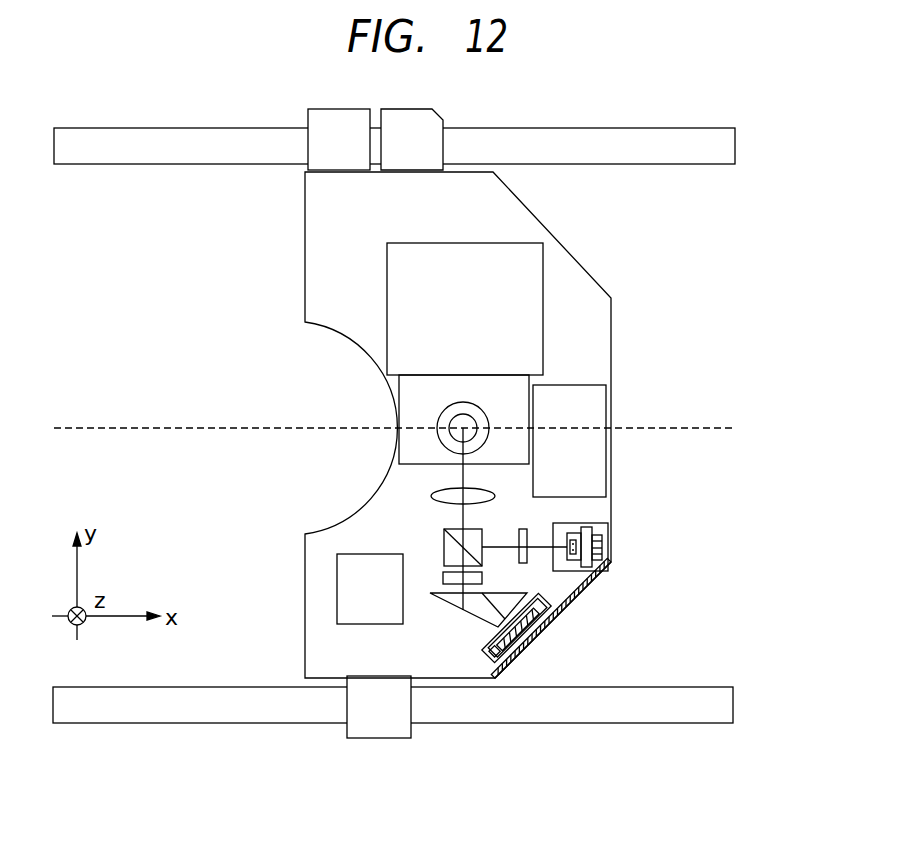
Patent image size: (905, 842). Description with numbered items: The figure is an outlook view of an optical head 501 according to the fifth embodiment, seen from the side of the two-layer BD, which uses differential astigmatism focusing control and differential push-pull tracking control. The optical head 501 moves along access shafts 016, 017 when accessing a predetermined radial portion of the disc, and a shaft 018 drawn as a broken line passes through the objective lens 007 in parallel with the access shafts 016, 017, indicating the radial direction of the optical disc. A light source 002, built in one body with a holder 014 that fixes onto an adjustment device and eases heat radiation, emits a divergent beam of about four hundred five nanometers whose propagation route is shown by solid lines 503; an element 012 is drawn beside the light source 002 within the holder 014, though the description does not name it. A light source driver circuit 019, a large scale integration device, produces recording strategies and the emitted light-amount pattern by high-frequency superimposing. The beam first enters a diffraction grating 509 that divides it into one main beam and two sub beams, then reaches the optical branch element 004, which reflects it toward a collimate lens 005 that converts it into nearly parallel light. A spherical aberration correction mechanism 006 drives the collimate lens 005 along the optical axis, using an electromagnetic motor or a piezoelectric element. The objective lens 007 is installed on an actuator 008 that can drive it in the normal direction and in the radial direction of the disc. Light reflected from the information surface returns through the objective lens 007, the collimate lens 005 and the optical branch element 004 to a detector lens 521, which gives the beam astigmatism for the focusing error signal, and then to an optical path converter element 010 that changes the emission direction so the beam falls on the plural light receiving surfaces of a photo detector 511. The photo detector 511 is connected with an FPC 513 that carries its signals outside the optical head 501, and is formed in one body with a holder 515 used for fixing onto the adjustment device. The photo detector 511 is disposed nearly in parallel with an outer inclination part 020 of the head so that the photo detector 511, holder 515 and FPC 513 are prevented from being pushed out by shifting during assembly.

The light source 002 is at (601, 576).
The optical branch element 004 is at (444, 545).
The collimate lens 005 is at (437, 496).
The spherical aberration correction mechanism 006 is at (600, 470).
The objective lens 007 is at (447, 412).
The actuator 008 is at (388, 290).
The optical path converter element 010 is at (478, 618).
The laser diode 012 is at (600, 544).
The holder 014 is at (573, 523).
The access shaft 016 is at (730, 148).
The access shaft 017 is at (728, 700).
The shaft 018 is at (708, 427).
The light source driver circuit 019 is at (340, 586).
The outer inclination part 020 is at (605, 563).
The optical head 501 is at (605, 325).
The solid lines 503 is at (505, 545).
The diffraction grating 509 is at (523, 528).
The photo detector 511 is at (484, 651).
The FPC 513 is at (542, 636).
The holder 515 is at (563, 609).
The detector lens 521 is at (483, 578).